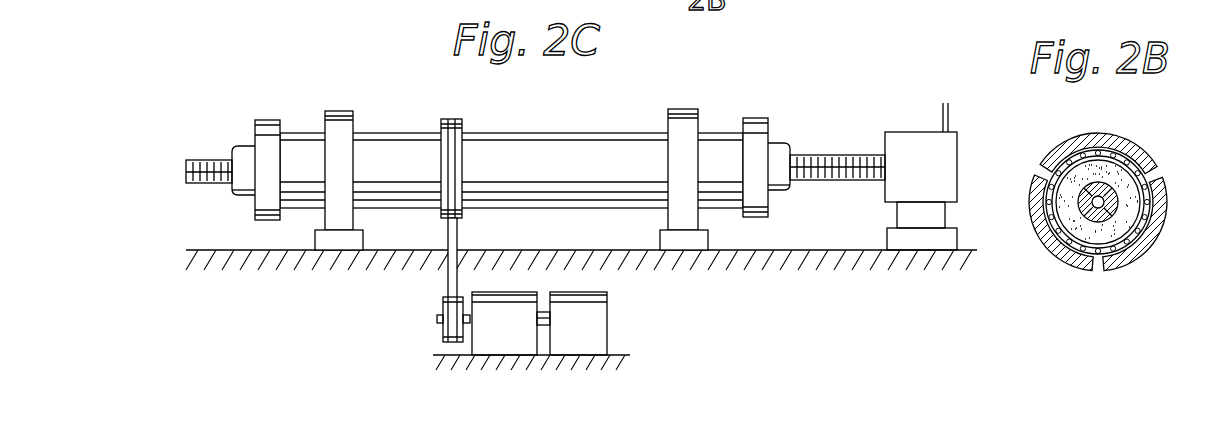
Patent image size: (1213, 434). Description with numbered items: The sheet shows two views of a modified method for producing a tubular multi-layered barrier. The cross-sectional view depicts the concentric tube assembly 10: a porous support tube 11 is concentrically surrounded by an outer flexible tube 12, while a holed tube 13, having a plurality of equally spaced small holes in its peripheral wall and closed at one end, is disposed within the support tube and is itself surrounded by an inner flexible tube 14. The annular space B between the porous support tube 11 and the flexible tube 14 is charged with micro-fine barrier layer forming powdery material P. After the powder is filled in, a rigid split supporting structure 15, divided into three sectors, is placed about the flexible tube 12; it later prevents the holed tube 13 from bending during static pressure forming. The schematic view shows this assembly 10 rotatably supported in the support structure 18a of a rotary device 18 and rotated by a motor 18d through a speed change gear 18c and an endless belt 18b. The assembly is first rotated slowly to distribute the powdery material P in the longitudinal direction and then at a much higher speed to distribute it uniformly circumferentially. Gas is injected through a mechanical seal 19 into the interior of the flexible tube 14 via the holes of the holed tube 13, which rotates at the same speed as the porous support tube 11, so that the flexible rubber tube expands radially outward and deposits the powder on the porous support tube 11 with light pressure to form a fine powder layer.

In FIG. 2C, the assembly 10 is at (574, 135).
In FIG. 2B, the porous support tube 11 is at (1093, 148).
In FIG. 2B, the flexible tube 12 is at (1127, 160).
In FIG. 2B, the holed tube 13 is at (1117, 190).
In FIG. 2B, the flexible tube 14 is at (1113, 208).
In FIG. 2B, the split supporting structure 15 is at (1058, 153).
In FIG. 2B, the annular space B is at (1063, 197).
In FIG. 2B, the powdery material P is at (1070, 210).
In FIG. 2C, the rotary device 18 is at (531, 144).
In FIG. 2C, the support structure 18a is at (344, 102).
In FIG. 2C, the endless belt 18b is at (458, 236).
In FIG. 2C, the speed change gear 18c is at (485, 346).
In FIG. 2C, the motor 18d is at (598, 321).
In FIG. 2C, the mechanical seal 19 is at (908, 140).